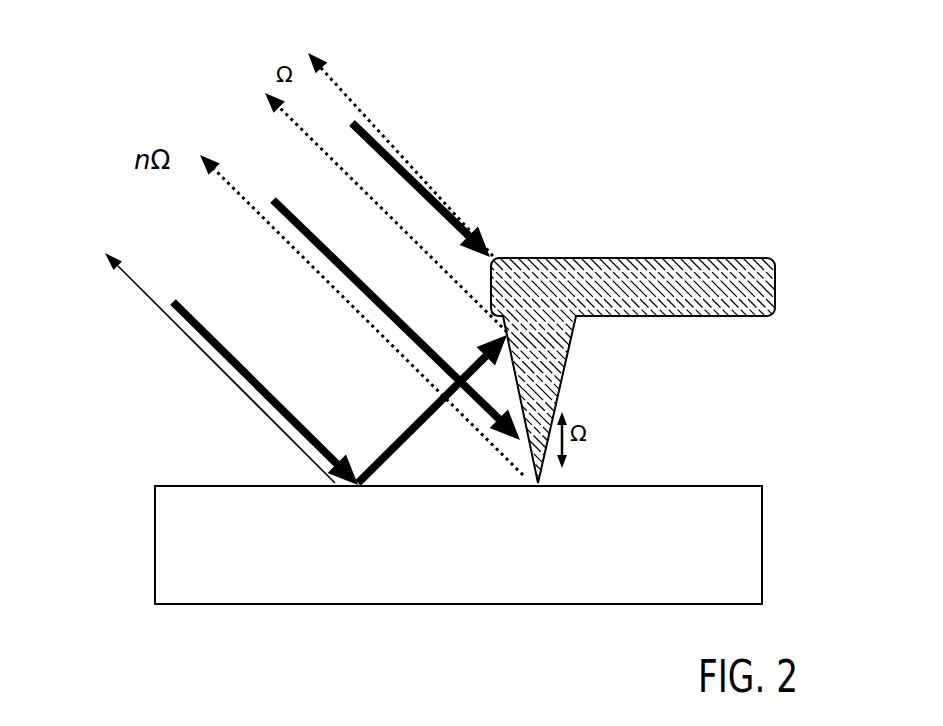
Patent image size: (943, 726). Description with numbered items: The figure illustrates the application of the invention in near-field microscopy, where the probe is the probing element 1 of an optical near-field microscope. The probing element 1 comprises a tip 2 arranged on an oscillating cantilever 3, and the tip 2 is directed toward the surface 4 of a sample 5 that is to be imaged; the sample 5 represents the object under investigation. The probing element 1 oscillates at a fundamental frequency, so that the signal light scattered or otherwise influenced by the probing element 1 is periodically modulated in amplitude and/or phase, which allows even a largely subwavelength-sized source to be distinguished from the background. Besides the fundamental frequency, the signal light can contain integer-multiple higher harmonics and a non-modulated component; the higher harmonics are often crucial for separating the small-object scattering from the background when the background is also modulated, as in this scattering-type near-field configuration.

The probing element 1 is at (604, 335).
The tip 2 is at (555, 400).
The oscillating cantilever 3 is at (600, 272).
The surface 4 is at (573, 483).
The sample 5 is at (730, 537).